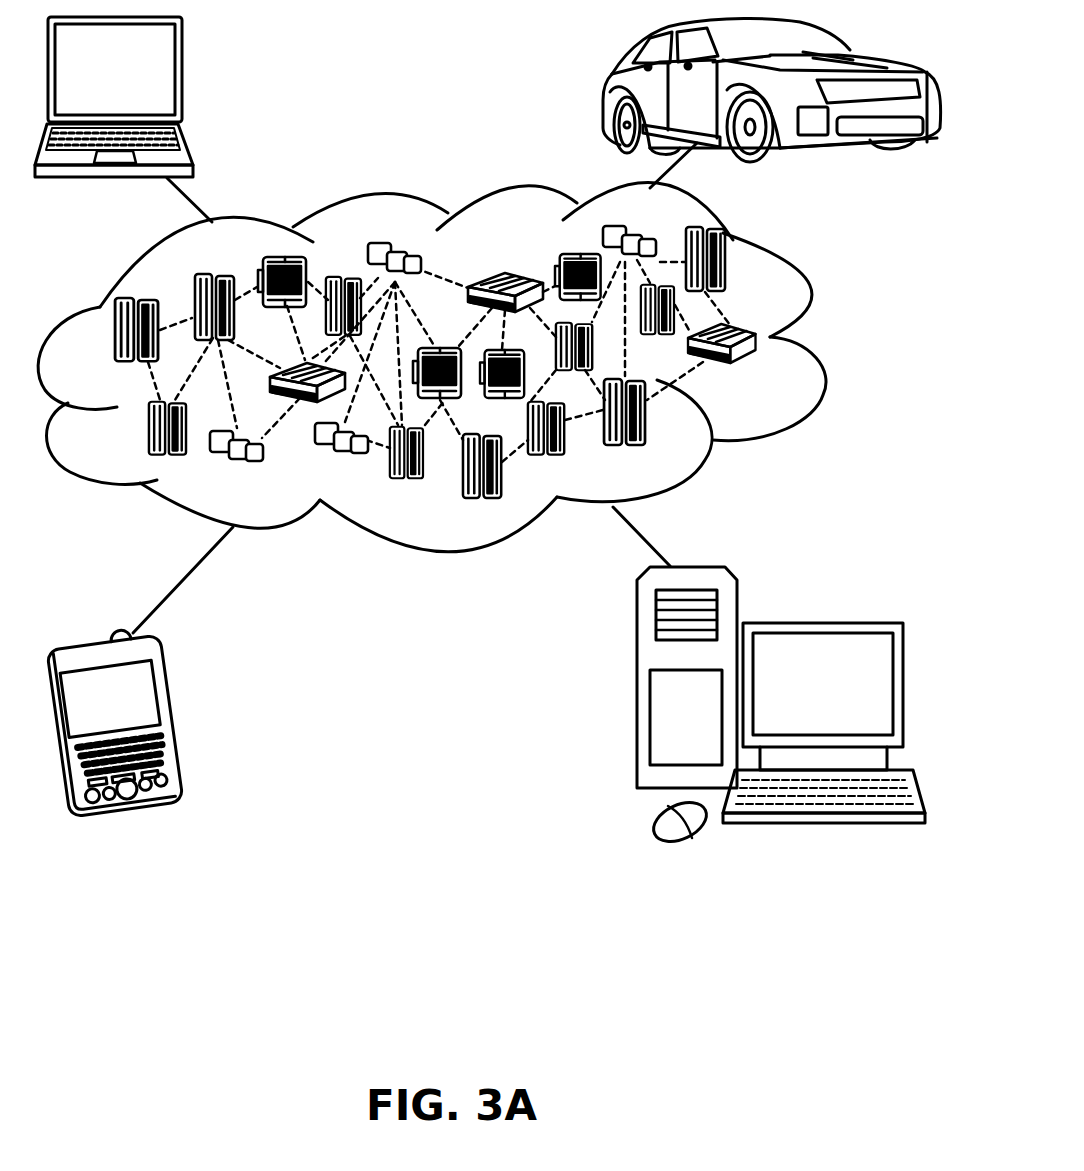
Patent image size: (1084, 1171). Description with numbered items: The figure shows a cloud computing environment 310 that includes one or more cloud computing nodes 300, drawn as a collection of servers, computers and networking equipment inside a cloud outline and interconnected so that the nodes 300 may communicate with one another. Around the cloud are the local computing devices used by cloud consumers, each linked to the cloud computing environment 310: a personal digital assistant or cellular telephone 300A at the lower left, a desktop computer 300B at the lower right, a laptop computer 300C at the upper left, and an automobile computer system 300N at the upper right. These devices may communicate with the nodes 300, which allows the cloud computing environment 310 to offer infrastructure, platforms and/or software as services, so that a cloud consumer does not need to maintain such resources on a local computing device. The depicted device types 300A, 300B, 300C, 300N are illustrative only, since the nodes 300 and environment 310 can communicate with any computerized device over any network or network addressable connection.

The cloud computing nodes 300 is at (770, 374).
The cloud computing environment 310 is at (815, 340).
The personal digital assistant (PDA) or cellular telephone 300A is at (173, 713).
The desktop computer 300B is at (820, 623).
The laptop computer 300C is at (182, 75).
The automobile computer system 300N is at (607, 92).